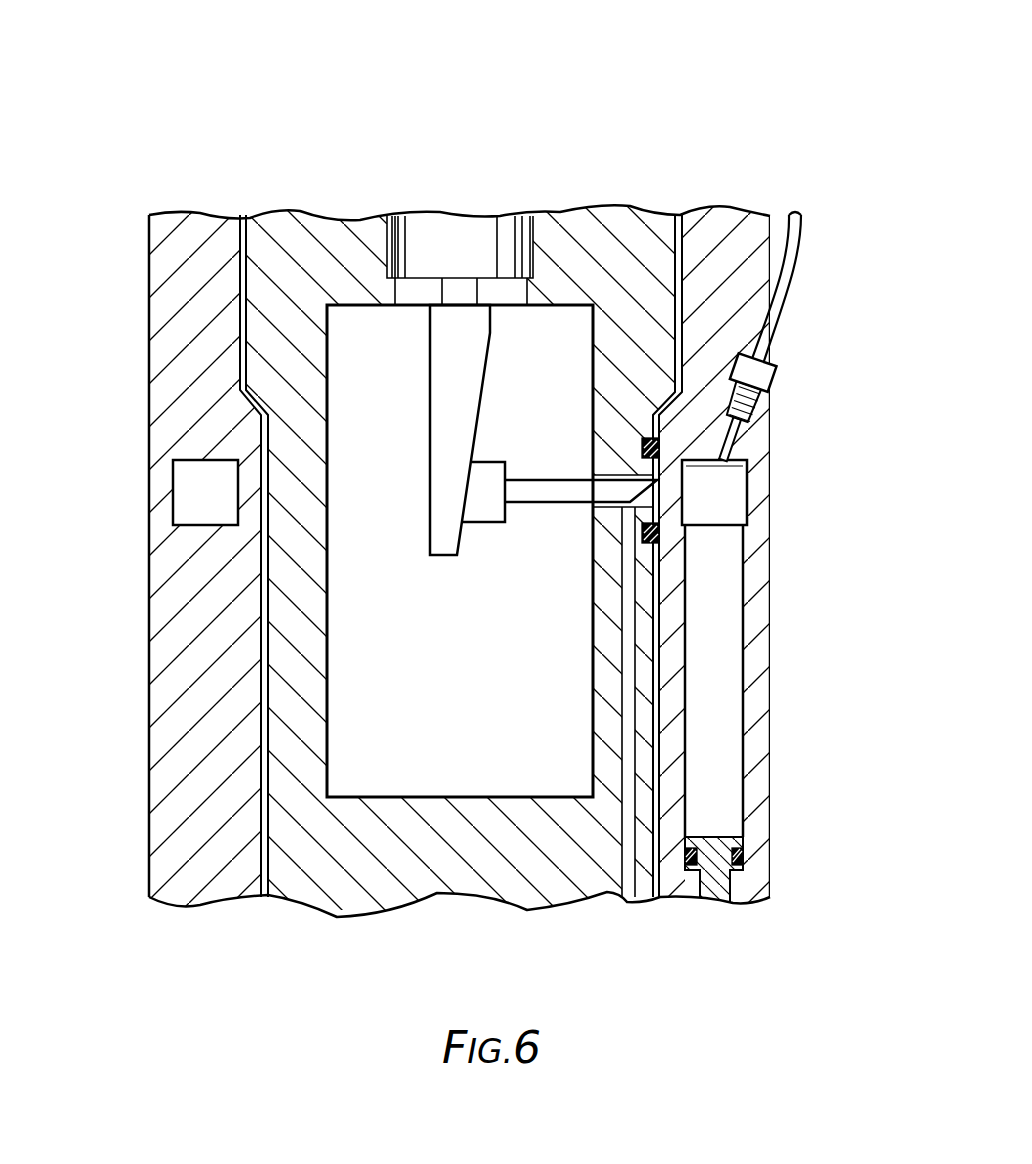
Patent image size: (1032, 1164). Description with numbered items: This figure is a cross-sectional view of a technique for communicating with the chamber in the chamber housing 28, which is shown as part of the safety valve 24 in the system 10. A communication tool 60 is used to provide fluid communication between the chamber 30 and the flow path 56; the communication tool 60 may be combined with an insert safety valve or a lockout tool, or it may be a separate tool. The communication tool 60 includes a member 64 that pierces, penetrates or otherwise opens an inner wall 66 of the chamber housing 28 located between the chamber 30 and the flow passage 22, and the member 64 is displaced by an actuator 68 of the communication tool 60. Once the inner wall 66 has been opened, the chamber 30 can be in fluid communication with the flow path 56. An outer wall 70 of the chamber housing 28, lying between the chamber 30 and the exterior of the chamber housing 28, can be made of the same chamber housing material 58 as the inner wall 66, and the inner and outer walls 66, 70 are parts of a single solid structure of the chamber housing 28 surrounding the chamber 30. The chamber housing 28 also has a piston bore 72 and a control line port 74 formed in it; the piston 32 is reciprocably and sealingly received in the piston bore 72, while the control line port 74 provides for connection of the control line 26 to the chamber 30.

The system 10 is at (768, 96).
The flow passage 22 is at (246, 247).
The safety valve 24 is at (147, 712).
The control line 26 is at (803, 262).
The chamber housing 28 is at (149, 240).
The chamber 30 is at (190, 485).
The piston 32 is at (744, 842).
The flow path 56 is at (620, 686).
The chamber housing material 58 is at (180, 594).
The communication tool 60 is at (527, 911).
The member 64 is at (556, 479).
The inner wall 66 is at (668, 482).
The actuator 68 is at (534, 241).
The outer wall 70 is at (758, 507).
The piston bore 72 is at (728, 598).
The control line port 74 is at (773, 400).